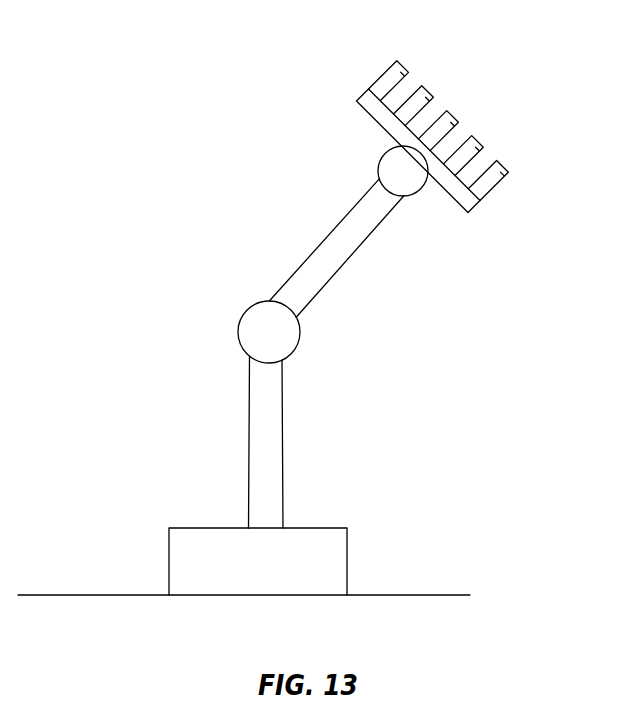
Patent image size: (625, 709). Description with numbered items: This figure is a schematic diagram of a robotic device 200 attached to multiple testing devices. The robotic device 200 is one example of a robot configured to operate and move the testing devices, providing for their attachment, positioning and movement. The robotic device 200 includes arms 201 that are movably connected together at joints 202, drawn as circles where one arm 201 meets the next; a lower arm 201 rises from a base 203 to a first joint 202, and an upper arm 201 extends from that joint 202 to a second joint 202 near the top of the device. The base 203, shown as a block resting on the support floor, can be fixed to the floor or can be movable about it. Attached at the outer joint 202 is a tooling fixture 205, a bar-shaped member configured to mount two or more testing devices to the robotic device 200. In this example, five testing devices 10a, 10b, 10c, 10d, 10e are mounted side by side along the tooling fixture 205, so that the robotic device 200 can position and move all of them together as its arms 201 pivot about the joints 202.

The robotic device 200 is at (200, 315).
The arm 201 is at (275, 468).
The joint 202 is at (408, 172).
The base 203 is at (298, 567).
The tooling fixture 205 is at (371, 93).
The testing device 10a is at (401, 64).
The testing device 10b is at (426, 89).
The testing device 10c is at (451, 114).
The testing device 10d is at (476, 139).
The testing device 10e is at (501, 164).